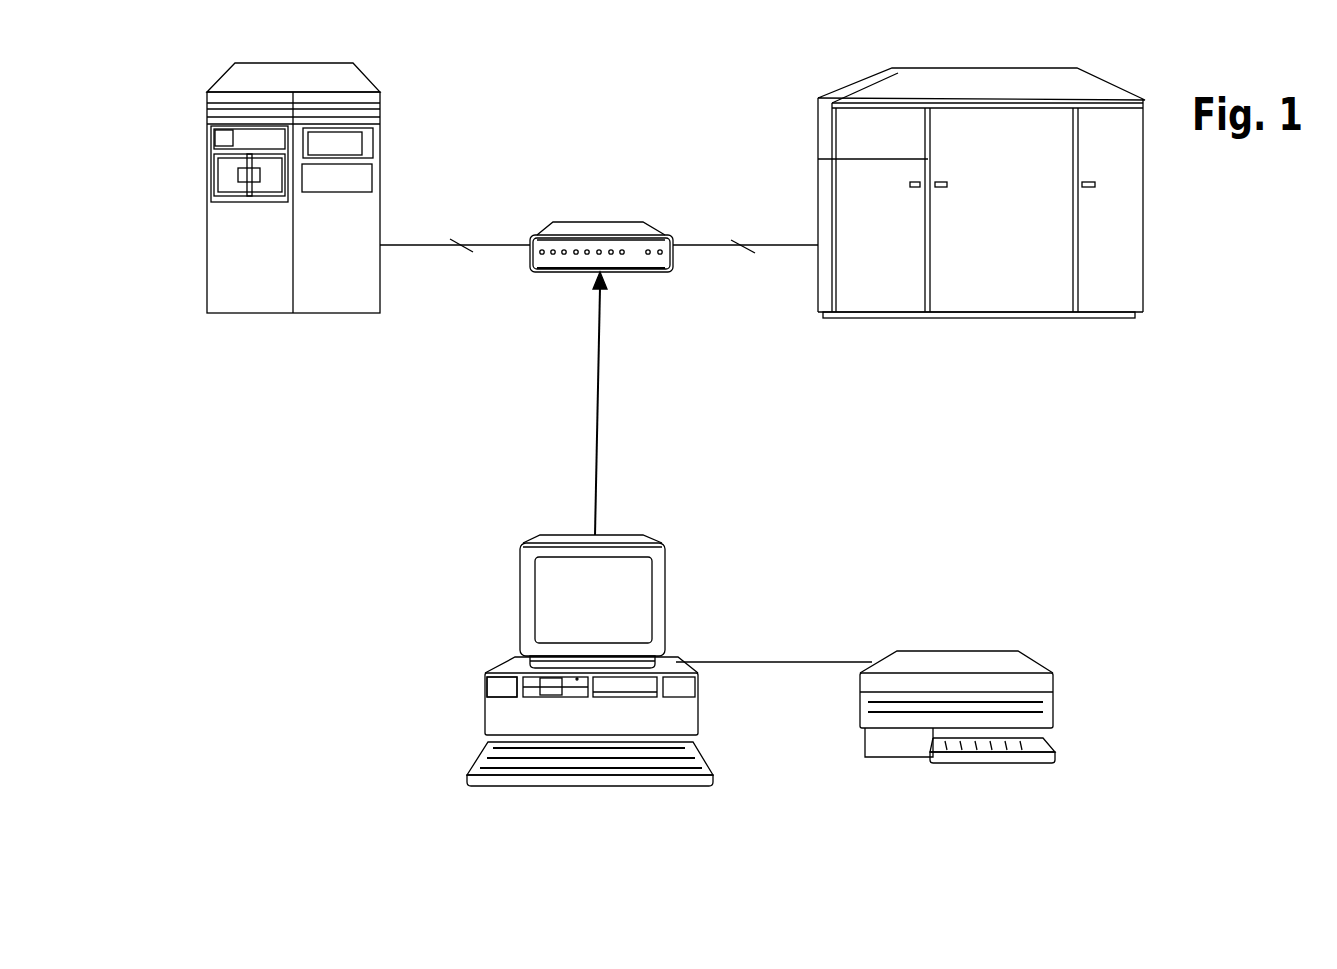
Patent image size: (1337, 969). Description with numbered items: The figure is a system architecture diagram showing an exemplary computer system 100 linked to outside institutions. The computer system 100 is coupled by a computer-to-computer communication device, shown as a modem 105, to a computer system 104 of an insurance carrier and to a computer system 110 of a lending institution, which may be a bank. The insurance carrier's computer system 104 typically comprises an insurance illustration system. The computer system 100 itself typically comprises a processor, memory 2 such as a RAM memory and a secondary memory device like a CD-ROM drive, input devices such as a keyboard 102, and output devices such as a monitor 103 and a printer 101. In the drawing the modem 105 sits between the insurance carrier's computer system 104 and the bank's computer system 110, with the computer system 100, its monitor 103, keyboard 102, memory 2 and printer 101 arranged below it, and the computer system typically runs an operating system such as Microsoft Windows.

The memory 2 is at (470, 692).
The computer system 100 is at (678, 731).
The printer 101 is at (957, 734).
The keyboard 102 is at (726, 785).
The monitor 103 is at (688, 561).
The computer system of an insurance carrier 104 is at (293, 199).
The modem 105 is at (599, 359).
The computer system of a lending institution 110 is at (981, 204).